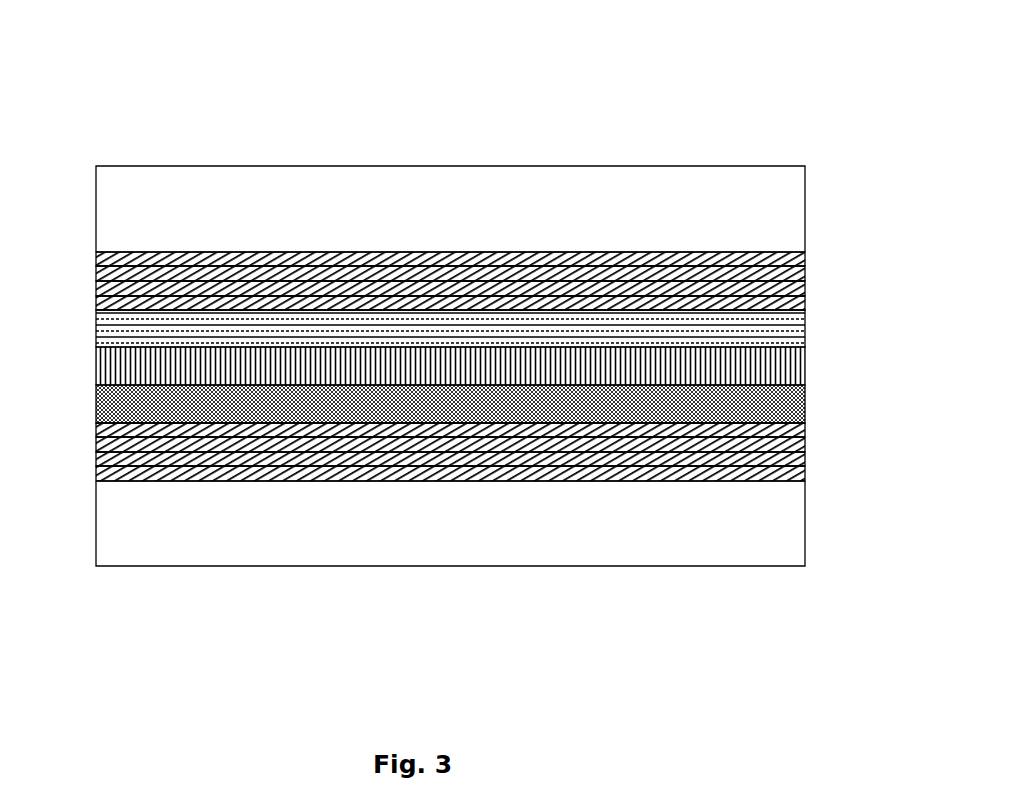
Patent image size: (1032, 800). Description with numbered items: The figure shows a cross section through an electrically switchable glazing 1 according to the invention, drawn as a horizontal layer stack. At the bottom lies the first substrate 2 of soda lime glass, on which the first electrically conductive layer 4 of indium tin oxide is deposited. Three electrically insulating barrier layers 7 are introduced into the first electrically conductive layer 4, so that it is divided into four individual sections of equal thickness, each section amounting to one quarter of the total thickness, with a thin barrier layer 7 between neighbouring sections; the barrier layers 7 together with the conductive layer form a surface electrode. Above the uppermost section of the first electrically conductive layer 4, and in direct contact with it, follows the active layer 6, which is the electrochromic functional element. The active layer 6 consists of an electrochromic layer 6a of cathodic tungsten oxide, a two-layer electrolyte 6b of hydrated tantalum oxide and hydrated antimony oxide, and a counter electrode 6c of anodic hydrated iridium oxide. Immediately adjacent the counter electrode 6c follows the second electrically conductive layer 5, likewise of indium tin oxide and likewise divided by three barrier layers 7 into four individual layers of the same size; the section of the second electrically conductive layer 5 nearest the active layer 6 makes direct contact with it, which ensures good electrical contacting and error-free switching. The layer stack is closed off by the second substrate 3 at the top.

The glazing 1 is at (479, 299).
The first substrate 2 is at (757, 527).
The second substrate 3 is at (750, 212).
The first electrically conductive layer 4 is at (93, 464).
The second electrically conductive layer 5 is at (93, 294).
The active layer 6 is at (507, 366).
The electrochromic layer 6a is at (765, 403).
The electrolyte 6b is at (765, 362).
The counter electrode 6c is at (765, 325).
The electrically insulating barrier layer 7 is at (781, 294).